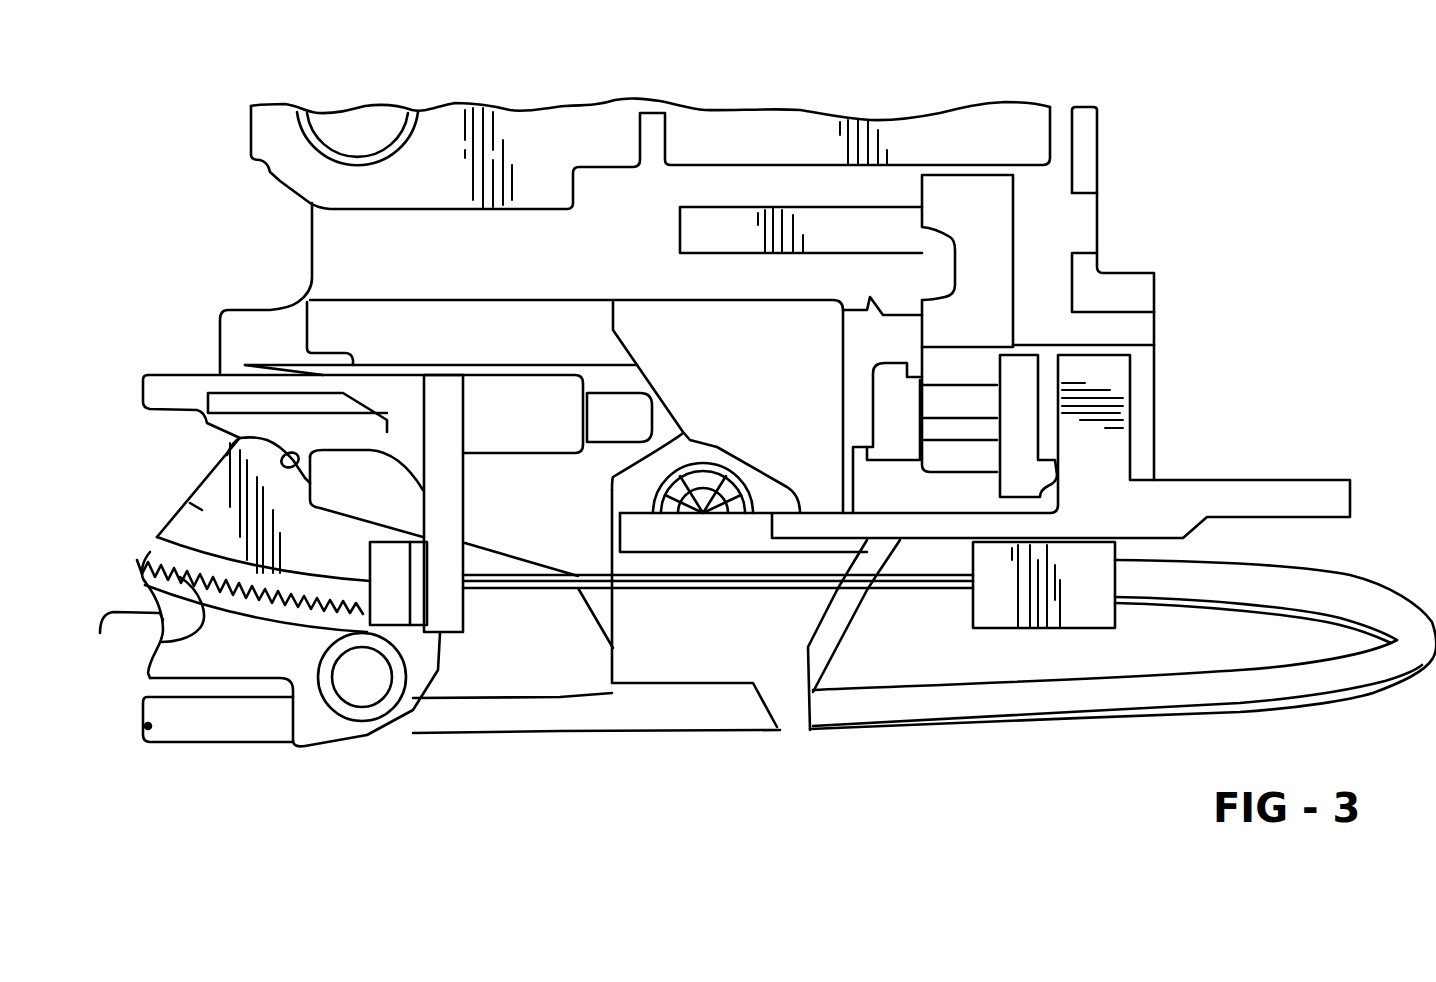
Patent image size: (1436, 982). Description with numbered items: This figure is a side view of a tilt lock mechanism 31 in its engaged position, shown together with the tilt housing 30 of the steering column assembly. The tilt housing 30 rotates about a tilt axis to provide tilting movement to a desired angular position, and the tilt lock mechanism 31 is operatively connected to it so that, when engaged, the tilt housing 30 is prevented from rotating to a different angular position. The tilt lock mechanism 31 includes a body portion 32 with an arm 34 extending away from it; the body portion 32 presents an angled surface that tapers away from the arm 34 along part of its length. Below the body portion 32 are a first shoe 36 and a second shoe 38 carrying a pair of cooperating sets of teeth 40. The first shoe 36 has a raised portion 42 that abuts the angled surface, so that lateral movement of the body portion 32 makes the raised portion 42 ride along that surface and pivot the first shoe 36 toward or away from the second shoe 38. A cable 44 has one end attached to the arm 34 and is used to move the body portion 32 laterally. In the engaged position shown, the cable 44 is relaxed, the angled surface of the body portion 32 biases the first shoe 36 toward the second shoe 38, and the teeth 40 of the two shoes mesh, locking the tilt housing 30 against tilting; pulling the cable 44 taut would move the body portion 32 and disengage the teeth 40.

The tilt housing 30 is at (1080, 223).
The tilt lock mechanism 31 is at (1196, 354).
The body portion 32 is at (240, 377).
The arm 34 is at (460, 488).
The first shoe 36 is at (185, 503).
The second shoe 38 is at (224, 657).
The teeth 40 is at (162, 642).
The raised portion 42 is at (293, 470).
The cable 44 is at (908, 577).